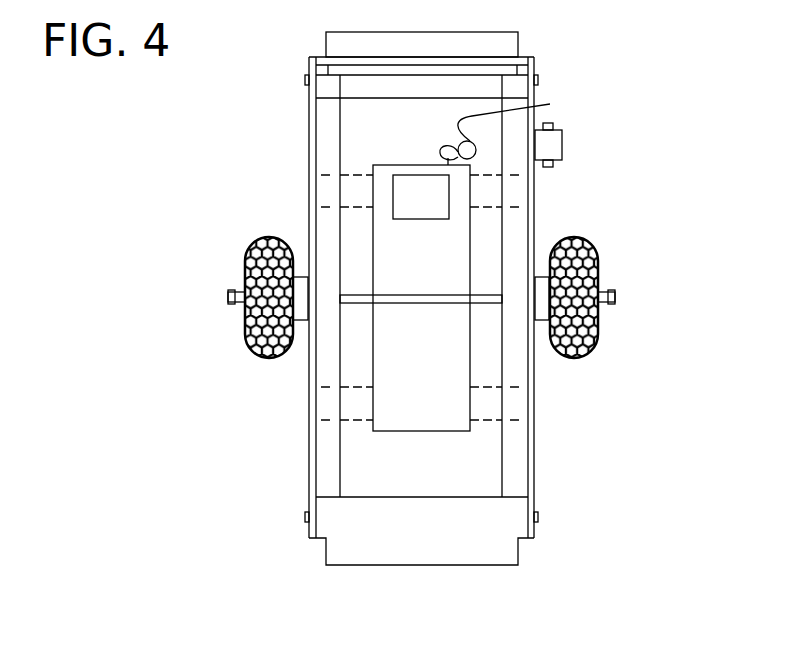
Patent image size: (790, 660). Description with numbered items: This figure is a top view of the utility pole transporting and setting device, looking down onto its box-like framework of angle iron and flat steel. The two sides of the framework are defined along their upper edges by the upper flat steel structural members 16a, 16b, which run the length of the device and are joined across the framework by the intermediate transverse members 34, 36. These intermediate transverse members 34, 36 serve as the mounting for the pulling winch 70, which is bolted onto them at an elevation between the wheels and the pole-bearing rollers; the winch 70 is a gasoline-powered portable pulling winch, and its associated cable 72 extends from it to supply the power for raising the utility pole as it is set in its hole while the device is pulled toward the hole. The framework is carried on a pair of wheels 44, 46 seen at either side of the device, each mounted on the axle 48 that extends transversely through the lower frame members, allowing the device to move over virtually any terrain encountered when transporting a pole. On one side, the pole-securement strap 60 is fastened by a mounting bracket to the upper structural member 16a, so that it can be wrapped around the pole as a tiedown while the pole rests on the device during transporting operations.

The upper flat steel structural member 16a is at (535, 472).
The upper flat steel structural member 16b is at (308, 175).
The intermediate transverse member 34 is at (357, 195).
The intermediate transverse member 36 is at (487, 405).
The wheel 44 is at (593, 350).
The wheel 46 is at (252, 348).
The axle 48 is at (475, 293).
The pole-securement strap 60 is at (550, 145).
The pulling winch 70 is at (372, 362).
The cable 72 is at (550, 104).